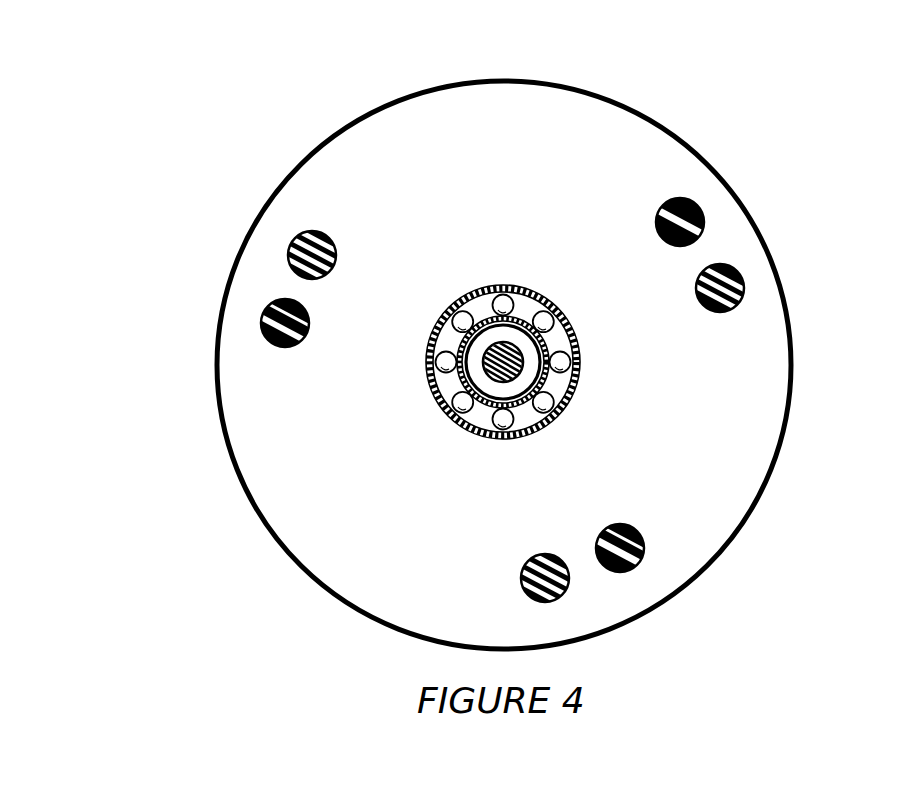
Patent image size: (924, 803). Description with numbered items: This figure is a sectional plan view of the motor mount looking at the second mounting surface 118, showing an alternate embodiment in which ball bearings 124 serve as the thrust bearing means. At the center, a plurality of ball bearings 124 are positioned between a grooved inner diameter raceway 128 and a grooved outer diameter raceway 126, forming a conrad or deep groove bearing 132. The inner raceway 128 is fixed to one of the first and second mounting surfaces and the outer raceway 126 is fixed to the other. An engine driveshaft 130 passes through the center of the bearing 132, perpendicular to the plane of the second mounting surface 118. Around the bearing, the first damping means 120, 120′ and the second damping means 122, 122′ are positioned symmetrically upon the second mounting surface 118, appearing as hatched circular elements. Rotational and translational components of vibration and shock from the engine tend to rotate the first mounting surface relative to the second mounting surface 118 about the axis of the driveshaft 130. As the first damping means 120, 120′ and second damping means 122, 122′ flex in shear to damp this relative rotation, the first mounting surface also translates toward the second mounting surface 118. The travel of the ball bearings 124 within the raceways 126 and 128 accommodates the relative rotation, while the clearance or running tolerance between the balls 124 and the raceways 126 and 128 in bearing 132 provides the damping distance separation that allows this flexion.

The second mounting surface 118 is at (595, 93).
The first damping means 120 is at (289, 247).
The second damping means 122 is at (263, 315).
The second damping means 122′ is at (643, 562).
The first damping means 120′ is at (562, 596).
The ball bearings 124 is at (566, 397).
The outer diameter raceway 126 is at (532, 293).
The inner diameter raceway 128 is at (540, 340).
The driveshaft 130 is at (471, 372).
The bearing 132 is at (505, 380).